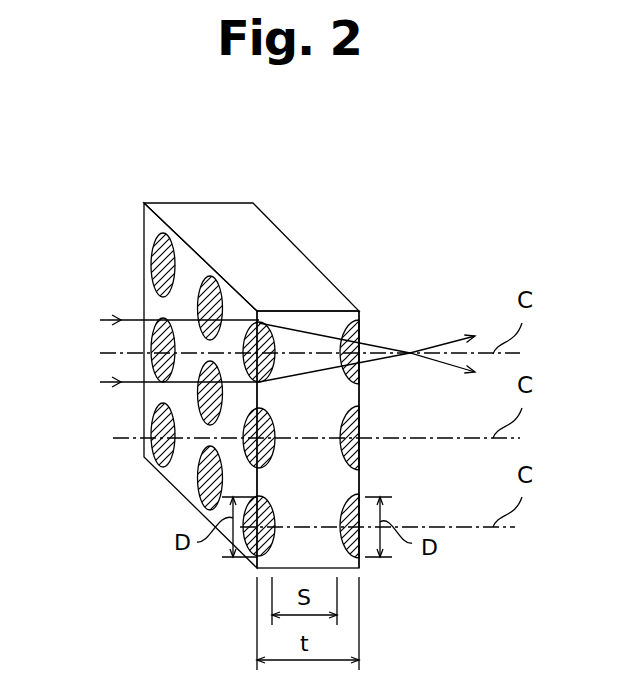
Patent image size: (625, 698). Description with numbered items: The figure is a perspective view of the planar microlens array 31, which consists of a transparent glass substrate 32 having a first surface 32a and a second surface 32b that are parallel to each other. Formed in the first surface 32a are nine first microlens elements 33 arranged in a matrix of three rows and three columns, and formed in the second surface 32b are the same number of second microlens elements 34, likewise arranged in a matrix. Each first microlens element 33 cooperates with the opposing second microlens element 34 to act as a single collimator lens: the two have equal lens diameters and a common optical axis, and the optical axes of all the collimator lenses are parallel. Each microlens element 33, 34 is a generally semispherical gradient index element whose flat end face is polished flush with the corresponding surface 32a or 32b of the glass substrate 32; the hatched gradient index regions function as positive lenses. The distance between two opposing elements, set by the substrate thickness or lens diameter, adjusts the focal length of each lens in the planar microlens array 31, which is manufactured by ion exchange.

The planar microlens array 31 is at (253, 355).
The transparent glass substrate 32 is at (189, 201).
The first surface 32a is at (143, 219).
The second surface 32b is at (362, 478).
The first microlens elements 33 is at (160, 265).
The second microlens elements 34 is at (362, 337).